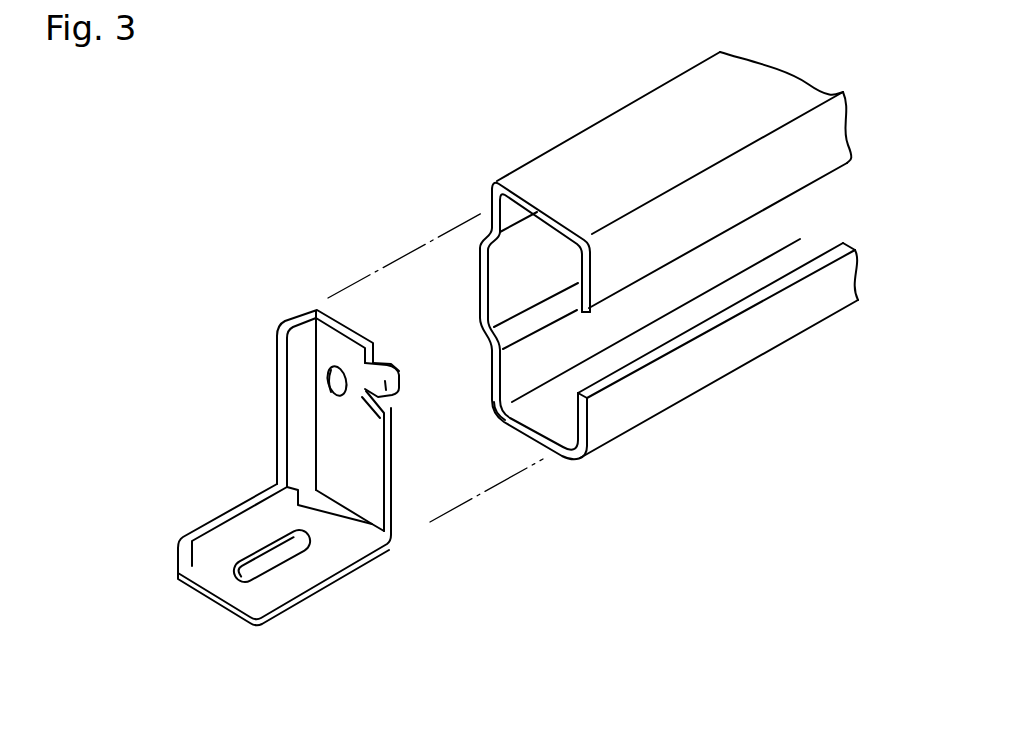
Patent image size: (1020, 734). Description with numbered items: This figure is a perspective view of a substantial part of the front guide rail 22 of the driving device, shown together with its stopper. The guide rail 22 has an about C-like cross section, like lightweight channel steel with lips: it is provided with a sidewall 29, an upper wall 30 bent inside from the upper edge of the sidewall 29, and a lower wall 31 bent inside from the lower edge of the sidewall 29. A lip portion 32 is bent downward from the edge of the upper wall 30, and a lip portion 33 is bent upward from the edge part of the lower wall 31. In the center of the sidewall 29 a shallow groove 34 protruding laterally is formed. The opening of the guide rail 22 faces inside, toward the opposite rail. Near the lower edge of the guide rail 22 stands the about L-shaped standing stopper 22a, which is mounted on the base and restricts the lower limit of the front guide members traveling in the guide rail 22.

The guide rail 22 is at (628, 285).
The standing stopper 22a is at (342, 585).
The sidewall 29 is at (478, 290).
The upper wall 30 is at (617, 143).
The lower wall 31 is at (528, 432).
The lip portion 32 is at (713, 214).
The lip portion 33 is at (698, 367).
The shallow groove 34 is at (505, 284).